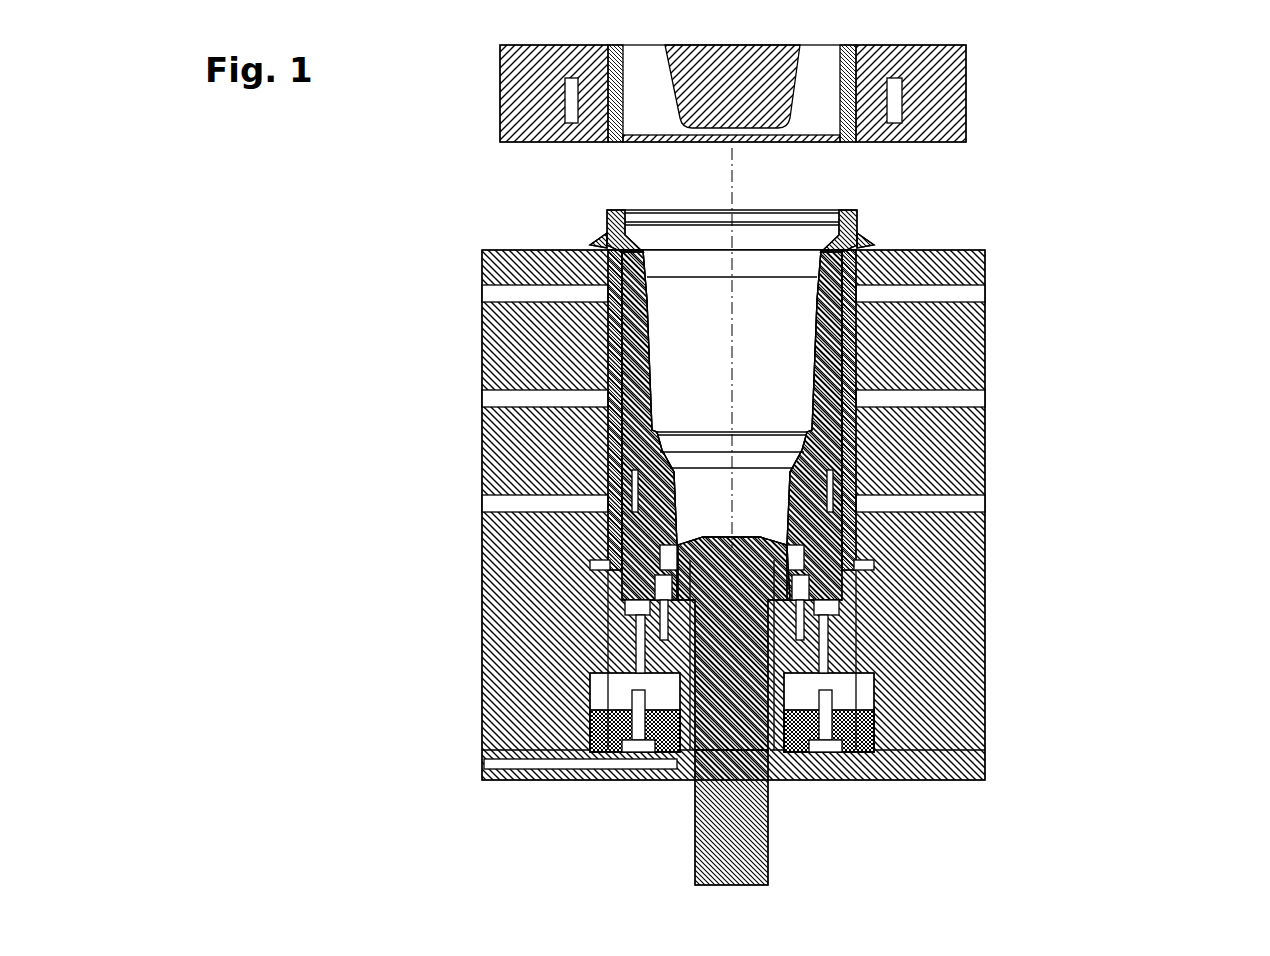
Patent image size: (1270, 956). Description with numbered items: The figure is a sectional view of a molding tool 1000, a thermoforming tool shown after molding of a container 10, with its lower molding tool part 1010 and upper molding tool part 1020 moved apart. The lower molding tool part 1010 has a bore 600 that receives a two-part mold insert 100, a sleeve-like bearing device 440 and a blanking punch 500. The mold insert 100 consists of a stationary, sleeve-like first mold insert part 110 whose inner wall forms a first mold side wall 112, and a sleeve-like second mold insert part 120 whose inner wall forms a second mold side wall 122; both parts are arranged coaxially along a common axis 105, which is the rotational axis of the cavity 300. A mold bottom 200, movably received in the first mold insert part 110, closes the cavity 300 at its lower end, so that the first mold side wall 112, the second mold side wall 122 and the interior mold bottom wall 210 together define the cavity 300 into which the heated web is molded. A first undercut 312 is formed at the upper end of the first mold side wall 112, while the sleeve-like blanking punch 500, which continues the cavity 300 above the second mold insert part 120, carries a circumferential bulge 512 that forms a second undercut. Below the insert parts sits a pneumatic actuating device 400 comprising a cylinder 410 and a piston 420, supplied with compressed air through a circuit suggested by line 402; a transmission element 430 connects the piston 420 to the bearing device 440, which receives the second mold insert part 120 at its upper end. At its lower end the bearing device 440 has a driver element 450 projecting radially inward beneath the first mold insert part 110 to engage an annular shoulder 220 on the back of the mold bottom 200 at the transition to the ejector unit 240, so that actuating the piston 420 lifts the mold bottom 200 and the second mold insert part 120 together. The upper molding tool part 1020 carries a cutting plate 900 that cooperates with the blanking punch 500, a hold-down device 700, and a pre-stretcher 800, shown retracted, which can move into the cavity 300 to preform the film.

The molding tool 1000 is at (762, 35).
The upper molding tool part 1020 is at (990, 75).
The pre-stretcher 800 is at (715, 102).
The cutting plate 900 is at (940, 128).
The hold-down device 700 is at (850, 118).
The blanking punch 500 is at (610, 215).
The bulge 512 is at (600, 233).
The cavity 300 is at (777, 290).
The common axis 105 is at (722, 298).
The second mold side wall 122 is at (845, 287).
The second mold insert part 120 is at (830, 333).
The container 10 is at (637, 347).
The first undercut 312 is at (640, 438).
The interior mold bottom wall 210 is at (715, 530).
The mold insert 100 is at (835, 443).
The first mold insert part 110 is at (845, 470).
The bearing device 440 is at (627, 545).
The first mold side wall 112 is at (850, 527).
The lower molding tool part 1010 is at (1085, 552).
The bore 600 is at (605, 562).
The driver element 450 is at (637, 600).
The mold bottom 200 is at (790, 565).
The transmission element 430 is at (627, 648).
The cylinder 410 is at (600, 688).
The shoulder 220 is at (813, 627).
The piston 420 is at (598, 738).
The line 402 is at (545, 765).
The actuating device 400 is at (598, 745).
The ejector unit 240 is at (750, 815).